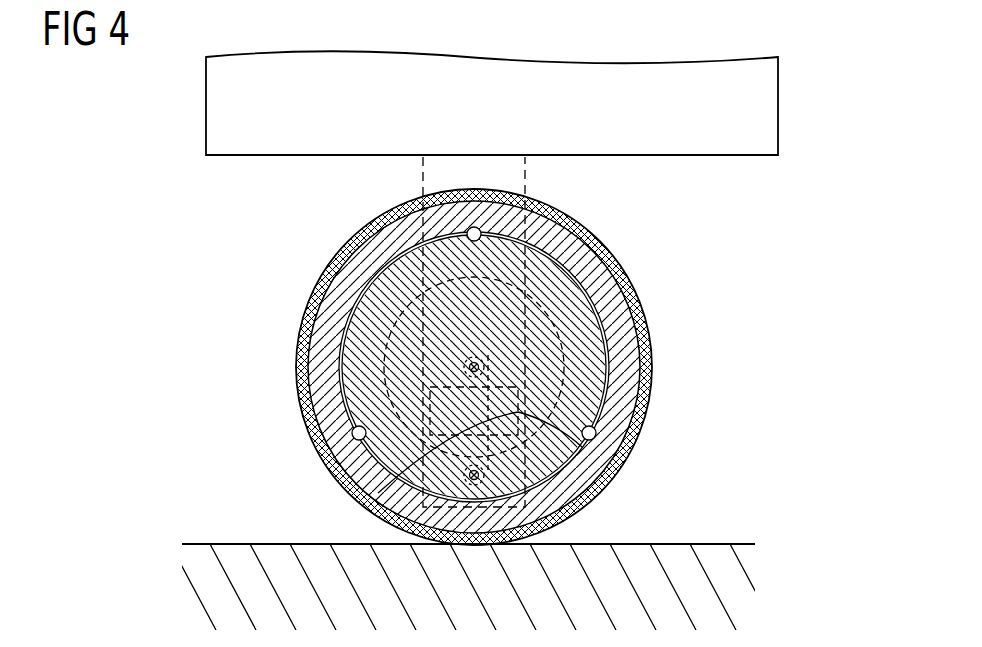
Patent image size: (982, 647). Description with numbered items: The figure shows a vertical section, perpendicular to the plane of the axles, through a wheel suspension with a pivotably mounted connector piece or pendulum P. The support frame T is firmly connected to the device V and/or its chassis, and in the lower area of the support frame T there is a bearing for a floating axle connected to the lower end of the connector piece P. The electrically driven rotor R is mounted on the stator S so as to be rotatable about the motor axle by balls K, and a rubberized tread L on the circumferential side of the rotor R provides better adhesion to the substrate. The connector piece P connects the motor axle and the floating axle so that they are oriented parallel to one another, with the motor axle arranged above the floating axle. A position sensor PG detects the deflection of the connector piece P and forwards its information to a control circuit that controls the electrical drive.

The device V is at (778, 110).
The support frame T is at (423, 181).
The rubberized tread L is at (596, 246).
The stator S is at (358, 357).
The balls K is at (352, 433).
The rotor R is at (628, 380).
The connector piece P is at (378, 493).
The position sensor PG is at (518, 411).